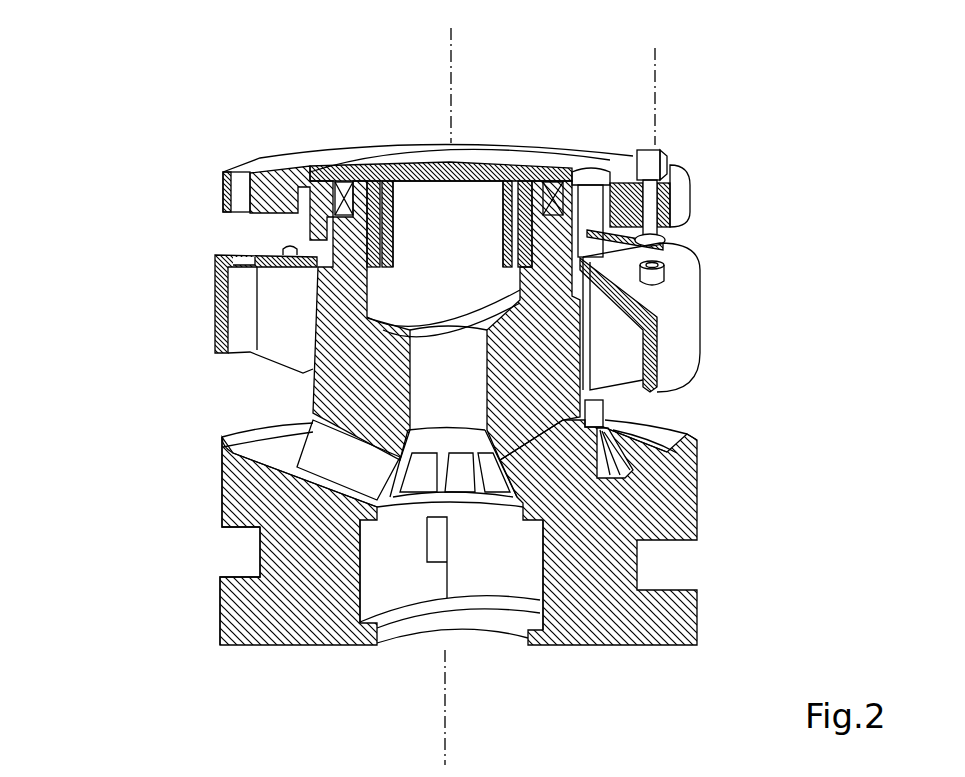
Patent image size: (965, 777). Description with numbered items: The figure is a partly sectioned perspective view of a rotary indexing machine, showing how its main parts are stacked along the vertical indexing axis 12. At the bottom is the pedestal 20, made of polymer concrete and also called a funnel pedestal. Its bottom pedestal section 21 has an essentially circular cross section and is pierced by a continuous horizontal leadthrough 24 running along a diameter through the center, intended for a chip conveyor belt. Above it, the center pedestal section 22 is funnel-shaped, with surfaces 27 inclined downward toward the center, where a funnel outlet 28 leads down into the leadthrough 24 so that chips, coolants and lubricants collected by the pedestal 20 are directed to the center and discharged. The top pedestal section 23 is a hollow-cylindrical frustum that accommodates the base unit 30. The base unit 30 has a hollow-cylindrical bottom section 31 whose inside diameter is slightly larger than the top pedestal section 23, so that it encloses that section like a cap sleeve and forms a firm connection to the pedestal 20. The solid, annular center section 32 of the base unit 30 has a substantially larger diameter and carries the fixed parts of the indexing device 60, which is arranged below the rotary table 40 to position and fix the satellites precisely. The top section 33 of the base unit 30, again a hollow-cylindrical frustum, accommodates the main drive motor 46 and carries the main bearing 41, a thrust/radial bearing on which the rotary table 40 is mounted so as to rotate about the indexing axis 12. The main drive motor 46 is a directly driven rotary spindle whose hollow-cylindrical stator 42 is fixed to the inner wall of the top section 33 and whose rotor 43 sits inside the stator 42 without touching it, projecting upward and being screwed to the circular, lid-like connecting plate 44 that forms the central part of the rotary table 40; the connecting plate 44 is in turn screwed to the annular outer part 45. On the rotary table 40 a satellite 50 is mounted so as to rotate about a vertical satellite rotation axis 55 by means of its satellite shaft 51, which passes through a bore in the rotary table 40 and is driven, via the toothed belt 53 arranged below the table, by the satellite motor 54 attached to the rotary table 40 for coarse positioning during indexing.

The indexing axis 12 is at (455, 33).
The pedestal 20 is at (700, 549).
The bottom pedestal section 21 is at (290, 547).
The center pedestal section 22 is at (247, 502).
The top pedestal section 23 is at (318, 388).
The horizontal leadthrough 24 is at (473, 585).
The inclined surfaces 27 is at (273, 458).
The funnel outlet 28 is at (492, 478).
The base unit 30 is at (192, 297).
The hollow-cylindrical bottom section 31 is at (615, 404).
The annular center section 32 is at (667, 352).
The top section 33 is at (534, 182).
The rotary table 40 is at (264, 154).
The main bearing 41 is at (352, 165).
The stator 42 is at (371, 162).
The rotor 43 is at (392, 162).
The connecting plate 44 is at (419, 162).
The annular outer part 45 is at (222, 194).
The main drive motor 46 is at (470, 198).
The satellite 50 is at (698, 146).
The satellite shaft 51 is at (665, 201).
The toothed belt 53 is at (665, 245).
The satellite motor 54 is at (592, 185).
The satellite rotation axis 55 is at (657, 58).
The indexing device 60 is at (695, 276).